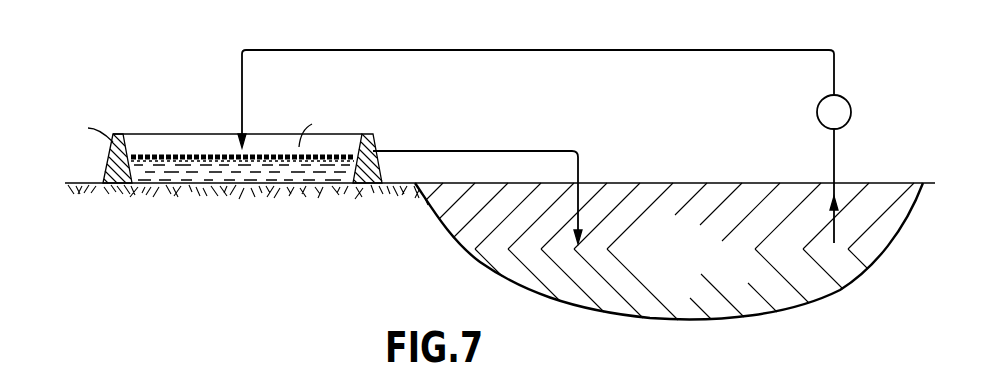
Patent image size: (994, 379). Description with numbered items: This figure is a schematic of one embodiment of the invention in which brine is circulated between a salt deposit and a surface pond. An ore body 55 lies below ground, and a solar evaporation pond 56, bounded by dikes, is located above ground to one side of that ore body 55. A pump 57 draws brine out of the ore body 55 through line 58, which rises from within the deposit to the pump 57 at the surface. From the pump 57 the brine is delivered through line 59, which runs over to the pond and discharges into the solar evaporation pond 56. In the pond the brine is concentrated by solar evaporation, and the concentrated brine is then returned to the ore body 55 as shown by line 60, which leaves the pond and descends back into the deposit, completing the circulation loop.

The ore body 55 is at (688, 295).
The solar evaporation pond 56 is at (153, 130).
The pump 57 is at (861, 94).
The line 58 is at (838, 217).
The line 59 is at (547, 39).
The line 60 is at (582, 160).